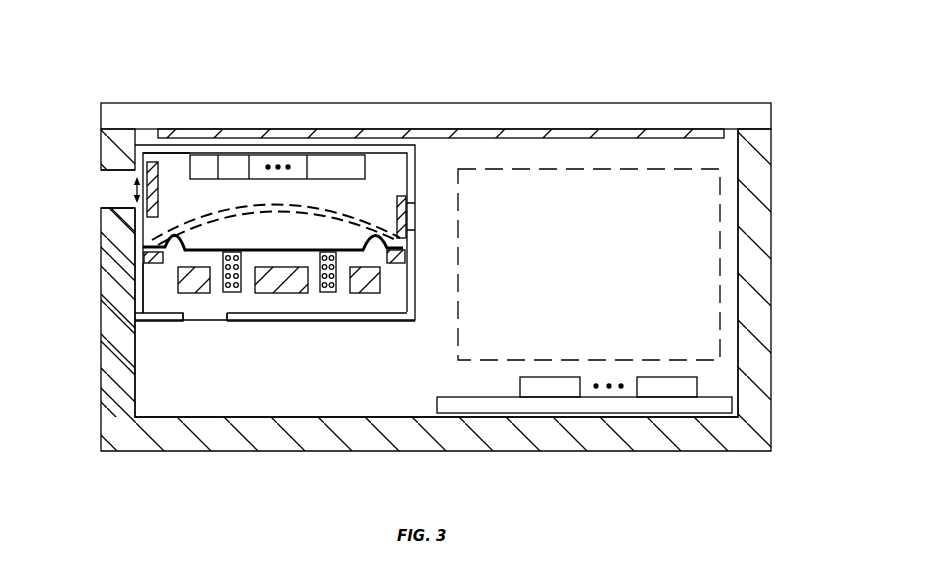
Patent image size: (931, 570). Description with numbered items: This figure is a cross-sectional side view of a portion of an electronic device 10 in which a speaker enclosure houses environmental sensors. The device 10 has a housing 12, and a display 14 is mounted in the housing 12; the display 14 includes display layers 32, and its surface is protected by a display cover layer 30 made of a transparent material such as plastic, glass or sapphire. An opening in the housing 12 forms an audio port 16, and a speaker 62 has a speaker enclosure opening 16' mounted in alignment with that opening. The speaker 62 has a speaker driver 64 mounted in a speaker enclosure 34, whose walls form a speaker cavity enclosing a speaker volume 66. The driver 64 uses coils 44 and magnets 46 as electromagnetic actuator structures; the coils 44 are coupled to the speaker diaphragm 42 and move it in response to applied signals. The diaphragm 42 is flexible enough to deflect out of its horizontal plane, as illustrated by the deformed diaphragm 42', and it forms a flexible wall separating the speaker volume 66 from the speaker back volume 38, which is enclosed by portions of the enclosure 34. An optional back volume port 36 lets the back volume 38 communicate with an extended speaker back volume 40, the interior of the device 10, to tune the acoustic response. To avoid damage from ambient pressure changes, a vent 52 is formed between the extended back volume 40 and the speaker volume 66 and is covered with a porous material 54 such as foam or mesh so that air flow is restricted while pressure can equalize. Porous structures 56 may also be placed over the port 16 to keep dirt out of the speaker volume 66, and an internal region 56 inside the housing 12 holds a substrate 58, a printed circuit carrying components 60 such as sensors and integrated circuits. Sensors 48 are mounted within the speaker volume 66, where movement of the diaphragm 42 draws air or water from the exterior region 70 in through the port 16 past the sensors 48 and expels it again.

The electronic device 10 is at (792, 102).
The housing 12 is at (641, 442).
The display 14 is at (575, 74).
The audio port 16 is at (88, 205).
The speaker enclosure opening 16' is at (98, 185).
The display cover layer 30 is at (325, 112).
The display layers 32 is at (432, 133).
The speaker enclosure 34 is at (299, 321).
The back volume port 36 is at (227, 338).
The speaker back volume 38 is at (157, 303).
The extended speaker back volume 40 is at (207, 405).
The speaker diaphragm 42 is at (273, 233).
The deformed diaphragm 42' is at (276, 213).
The coils 44 is at (233, 293).
The magnets 46 is at (192, 293).
The sensors 48 is at (209, 175).
The vent 52 is at (410, 213).
The porous material 54 is at (399, 200).
The porous structures 56 is at (159, 184).
The substrate 58 is at (456, 400).
The components 60 is at (648, 378).
The speaker 62 is at (320, 335).
The speaker driver 64 is at (160, 275).
The speaker volume 66 is at (182, 172).
The exterior region 70 is at (46, 78).